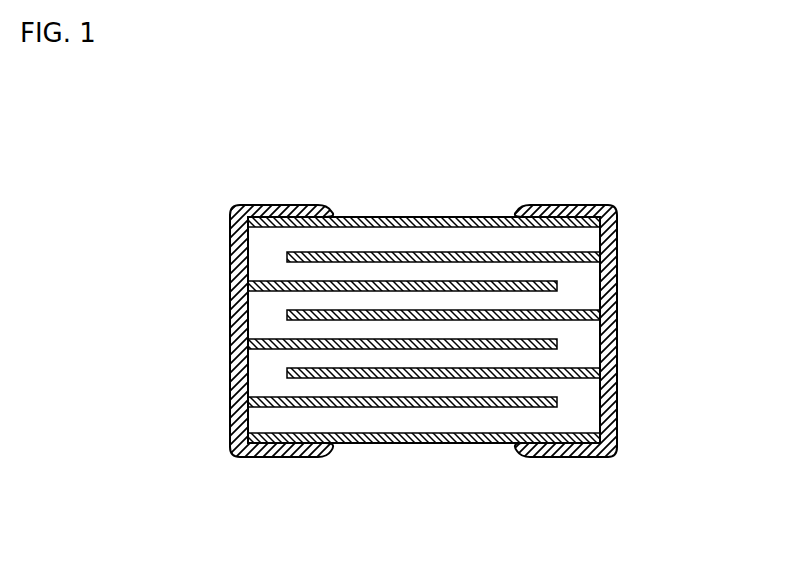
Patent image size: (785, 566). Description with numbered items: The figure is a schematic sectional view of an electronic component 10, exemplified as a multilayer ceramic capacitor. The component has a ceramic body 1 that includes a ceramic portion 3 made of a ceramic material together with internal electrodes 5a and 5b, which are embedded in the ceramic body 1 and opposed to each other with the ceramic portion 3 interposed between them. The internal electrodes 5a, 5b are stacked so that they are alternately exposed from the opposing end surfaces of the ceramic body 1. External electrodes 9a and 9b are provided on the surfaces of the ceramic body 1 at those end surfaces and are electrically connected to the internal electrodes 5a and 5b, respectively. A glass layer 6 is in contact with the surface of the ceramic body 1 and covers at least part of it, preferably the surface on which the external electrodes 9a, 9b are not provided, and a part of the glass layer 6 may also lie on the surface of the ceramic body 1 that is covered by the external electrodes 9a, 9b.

The ceramic body 1 is at (424, 324).
The ceramic portion 3 is at (367, 275).
The internal electrode 5a is at (274, 280).
The internal electrode 5b is at (298, 150).
The glass layer 6 is at (498, 217).
The external electrode 9a is at (229, 252).
The external electrode 9b is at (618, 253).
The electronic component 10 is at (462, 324).